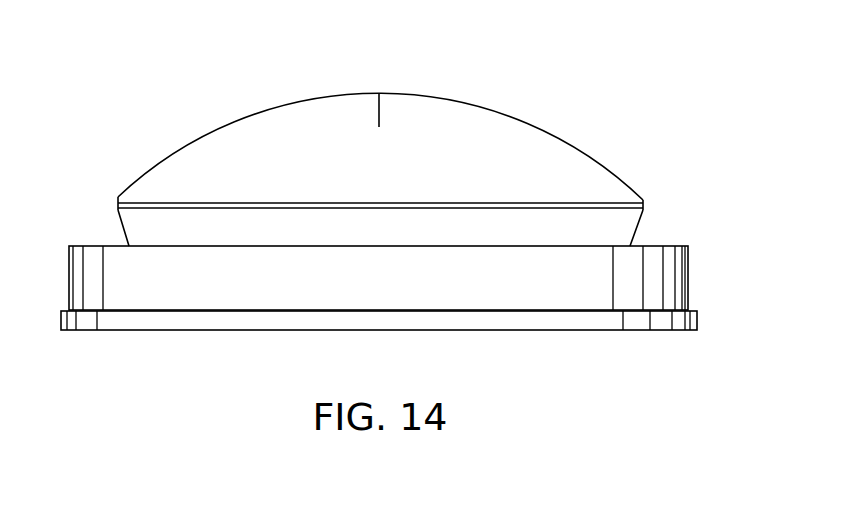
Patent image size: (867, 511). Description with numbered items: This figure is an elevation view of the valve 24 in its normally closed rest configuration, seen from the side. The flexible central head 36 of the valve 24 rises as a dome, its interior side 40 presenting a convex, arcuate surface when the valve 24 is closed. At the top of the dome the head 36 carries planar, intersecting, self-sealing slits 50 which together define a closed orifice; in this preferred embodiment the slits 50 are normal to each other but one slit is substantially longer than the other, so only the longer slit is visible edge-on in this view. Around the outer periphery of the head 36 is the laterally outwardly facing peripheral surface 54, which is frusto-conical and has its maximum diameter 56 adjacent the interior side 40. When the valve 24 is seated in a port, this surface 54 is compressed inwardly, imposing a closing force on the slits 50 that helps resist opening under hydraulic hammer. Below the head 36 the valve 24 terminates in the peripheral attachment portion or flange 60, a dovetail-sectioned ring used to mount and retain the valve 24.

The valve 24 is at (644, 76).
The head 36 is at (556, 158).
The interior side 40 is at (443, 113).
The slits 50 is at (376, 112).
The peripheral surface 54 is at (642, 223).
The maximum diameter 56 is at (647, 205).
The flange 60 is at (697, 271).